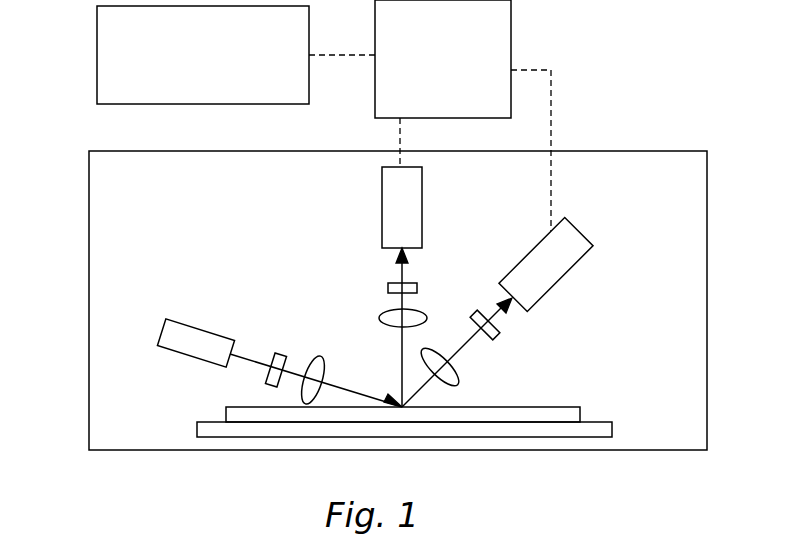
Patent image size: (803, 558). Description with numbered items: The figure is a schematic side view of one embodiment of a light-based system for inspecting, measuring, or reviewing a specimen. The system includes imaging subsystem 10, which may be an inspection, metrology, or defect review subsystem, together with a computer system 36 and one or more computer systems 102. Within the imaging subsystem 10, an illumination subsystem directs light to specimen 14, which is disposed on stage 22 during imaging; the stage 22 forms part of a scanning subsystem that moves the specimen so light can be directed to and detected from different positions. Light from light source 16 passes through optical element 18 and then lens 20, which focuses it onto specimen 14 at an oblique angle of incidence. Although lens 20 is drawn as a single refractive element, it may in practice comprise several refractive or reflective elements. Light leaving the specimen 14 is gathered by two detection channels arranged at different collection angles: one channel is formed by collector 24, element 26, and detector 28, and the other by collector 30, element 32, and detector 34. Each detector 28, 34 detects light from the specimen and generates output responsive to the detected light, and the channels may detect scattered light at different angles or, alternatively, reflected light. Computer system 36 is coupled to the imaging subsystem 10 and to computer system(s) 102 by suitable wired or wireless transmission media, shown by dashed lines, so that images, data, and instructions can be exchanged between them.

The imaging subsystem 10 is at (89, 251).
The specimen 14 is at (237, 407).
The light source 16 is at (168, 323).
The optical element 18 is at (280, 356).
The lens 20 is at (318, 358).
The stage 22 is at (194, 430).
The collector 24 is at (381, 311).
The element 26 is at (388, 284).
The detector 28 is at (382, 211).
The collector 30 is at (459, 384).
The element 32 is at (497, 336).
The detector 34 is at (579, 262).
The computer system 36 is at (443, 59).
The computer system(s) 102 is at (203, 55).